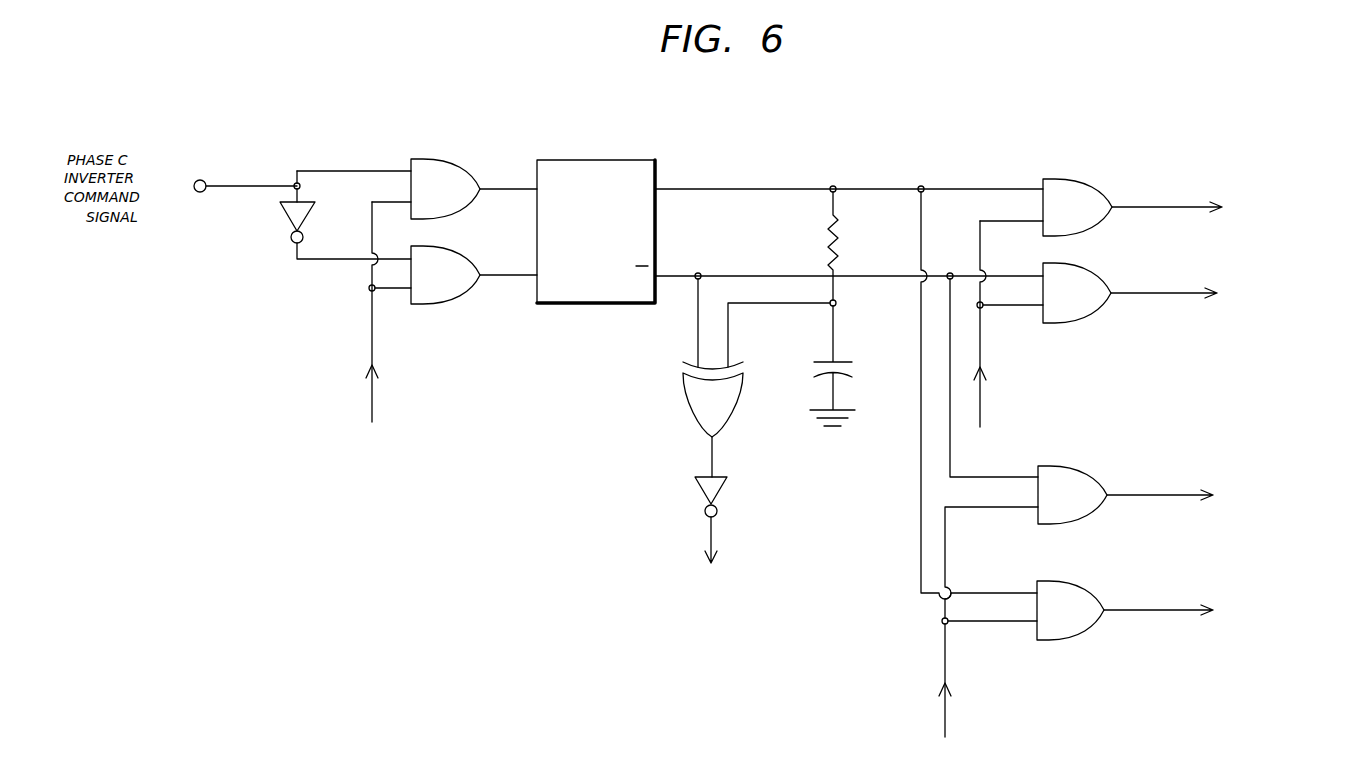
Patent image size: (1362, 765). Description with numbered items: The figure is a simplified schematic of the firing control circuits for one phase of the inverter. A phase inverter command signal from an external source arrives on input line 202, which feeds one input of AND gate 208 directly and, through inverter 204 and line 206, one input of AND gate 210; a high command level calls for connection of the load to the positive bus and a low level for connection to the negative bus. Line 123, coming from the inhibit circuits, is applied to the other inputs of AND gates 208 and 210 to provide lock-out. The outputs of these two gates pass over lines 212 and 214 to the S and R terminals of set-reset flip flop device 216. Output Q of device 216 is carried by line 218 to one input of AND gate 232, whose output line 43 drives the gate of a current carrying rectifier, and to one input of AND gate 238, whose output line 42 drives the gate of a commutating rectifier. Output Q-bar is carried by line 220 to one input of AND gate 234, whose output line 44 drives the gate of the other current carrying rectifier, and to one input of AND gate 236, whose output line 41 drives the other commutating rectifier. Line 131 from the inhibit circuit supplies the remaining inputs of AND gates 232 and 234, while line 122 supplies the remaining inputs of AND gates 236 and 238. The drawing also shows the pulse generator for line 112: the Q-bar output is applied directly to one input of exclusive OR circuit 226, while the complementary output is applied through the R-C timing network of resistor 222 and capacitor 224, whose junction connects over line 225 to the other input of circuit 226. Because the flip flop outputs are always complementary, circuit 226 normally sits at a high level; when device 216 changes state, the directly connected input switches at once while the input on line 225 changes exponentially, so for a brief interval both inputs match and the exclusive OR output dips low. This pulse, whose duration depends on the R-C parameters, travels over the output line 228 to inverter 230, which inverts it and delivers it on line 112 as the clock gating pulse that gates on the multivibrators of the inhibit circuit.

The input line 202 is at (241, 185).
The inverter 204 is at (285, 217).
The line 206 is at (335, 260).
The AND gate 208 is at (445, 160).
The AND gate 210 is at (443, 304).
The line 212 is at (507, 188).
The line 214 is at (509, 277).
The set-reset flip flop device 216 is at (583, 160).
The line 218 is at (712, 188).
The line 220 is at (762, 276).
The resistor 222 is at (830, 223).
The capacitor 224 is at (845, 355).
The line 225 is at (788, 304).
The exclusive OR circuit 226 is at (690, 407).
The exclusive OR output line 228 is at (713, 460).
The inverter 230 is at (700, 497).
The line 112 is at (713, 538).
The line 123 is at (373, 400).
The line 131 is at (981, 402).
The line 122 is at (946, 712).
The AND gate 232 is at (1088, 186).
The AND gate 234 is at (1068, 322).
The AND gate 236 is at (1083, 470).
The AND gate 238 is at (1068, 639).
The output line 43 is at (1150, 206).
The line 44 is at (1148, 292).
The line 41 is at (1147, 494).
The line 42 is at (1143, 609).